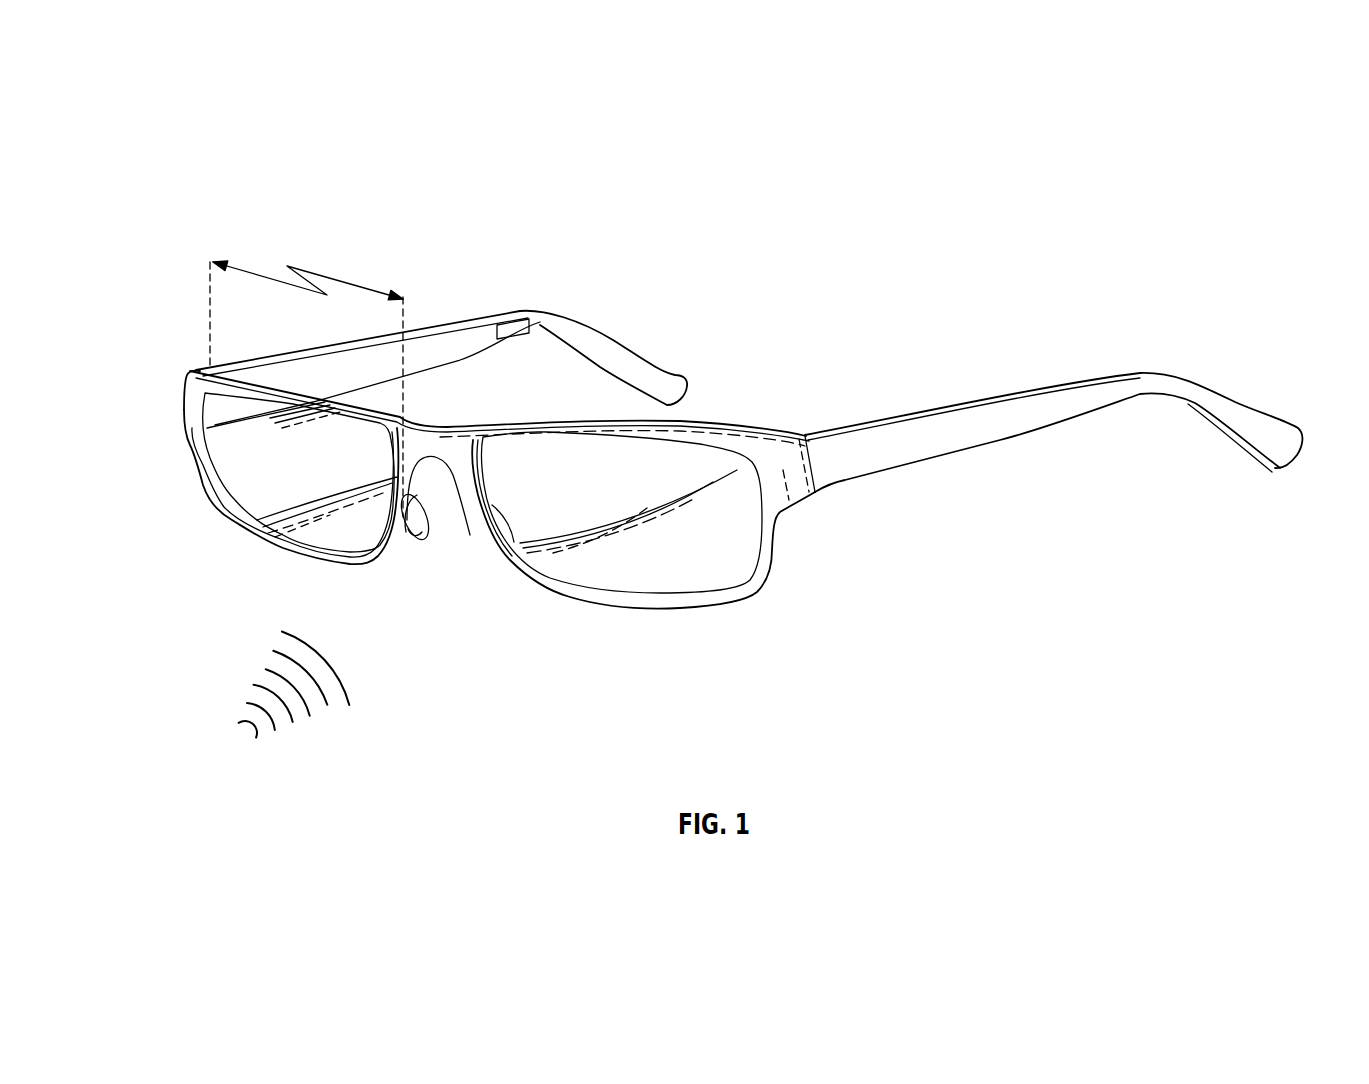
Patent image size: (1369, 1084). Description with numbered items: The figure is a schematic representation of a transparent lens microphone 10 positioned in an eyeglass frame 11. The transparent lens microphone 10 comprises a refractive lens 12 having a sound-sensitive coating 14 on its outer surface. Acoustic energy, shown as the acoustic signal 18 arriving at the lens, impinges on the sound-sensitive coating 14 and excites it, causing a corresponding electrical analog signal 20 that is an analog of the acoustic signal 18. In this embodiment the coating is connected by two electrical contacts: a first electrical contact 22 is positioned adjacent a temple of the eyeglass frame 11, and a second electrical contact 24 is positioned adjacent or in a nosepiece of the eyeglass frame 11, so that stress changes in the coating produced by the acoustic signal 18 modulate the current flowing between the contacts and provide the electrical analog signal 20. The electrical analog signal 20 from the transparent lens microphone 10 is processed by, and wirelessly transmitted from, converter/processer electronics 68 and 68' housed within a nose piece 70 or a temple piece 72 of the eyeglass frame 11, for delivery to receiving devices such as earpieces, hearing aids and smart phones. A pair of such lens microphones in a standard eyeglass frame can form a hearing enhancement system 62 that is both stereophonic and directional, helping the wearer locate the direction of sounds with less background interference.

The transparent lens microphone 10 is at (184, 463).
The eyeglass frame 11 is at (688, 424).
The refractive lens 12 is at (261, 472).
The sound-sensitive coating 14 is at (247, 503).
The acoustic signal 18 is at (332, 670).
The electrical analog signal 20 is at (315, 273).
The first electrical contact 22 is at (210, 371).
The second electrical contact 24 is at (402, 511).
The hearing enhancement system 62 is at (1028, 276).
The converter/processer electronics 68 is at (443, 547).
The converter/processer electronics 68' is at (553, 311).
The nose piece 70 is at (424, 516).
The temple piece 72 is at (668, 373).